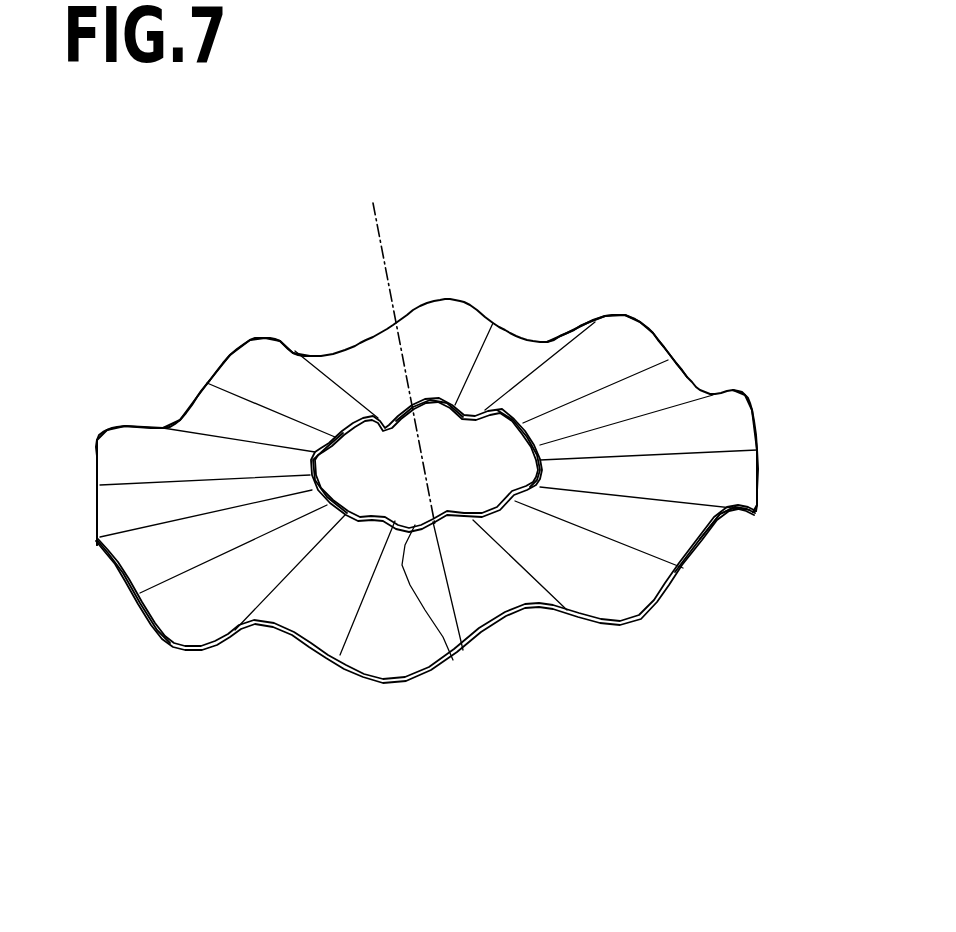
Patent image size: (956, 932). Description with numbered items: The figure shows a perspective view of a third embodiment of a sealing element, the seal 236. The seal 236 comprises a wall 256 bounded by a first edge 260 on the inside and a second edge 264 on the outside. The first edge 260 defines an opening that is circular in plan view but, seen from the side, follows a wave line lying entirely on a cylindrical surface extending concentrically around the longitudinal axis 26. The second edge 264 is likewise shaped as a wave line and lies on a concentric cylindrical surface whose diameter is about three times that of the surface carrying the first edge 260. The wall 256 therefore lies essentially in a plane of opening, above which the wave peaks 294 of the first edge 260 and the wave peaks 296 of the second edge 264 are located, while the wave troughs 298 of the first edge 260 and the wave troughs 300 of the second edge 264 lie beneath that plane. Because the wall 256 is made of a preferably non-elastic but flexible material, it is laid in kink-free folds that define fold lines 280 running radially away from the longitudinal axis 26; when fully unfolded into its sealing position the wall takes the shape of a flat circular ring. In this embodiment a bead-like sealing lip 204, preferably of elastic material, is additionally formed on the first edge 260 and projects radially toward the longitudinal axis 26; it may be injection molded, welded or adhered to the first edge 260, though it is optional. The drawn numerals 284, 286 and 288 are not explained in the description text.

The longitudinal axis 26 is at (373, 203).
The sealing lip 204 is at (350, 423).
The seal 236 is at (562, 250).
The wall 256 is at (602, 318).
The first edge 260 is at (380, 432).
The second edge 264 is at (758, 428).
The fold lines 280 is at (675, 393).
The central hub top 284 is at (430, 380).
The lower rim 286 is at (306, 678).
The central opening 288 is at (490, 482).
The wave peaks 294 is at (388, 520).
The wave peaks 296 is at (97, 472).
The wave troughs 298 is at (453, 660).
The wave troughs 300 is at (174, 643).